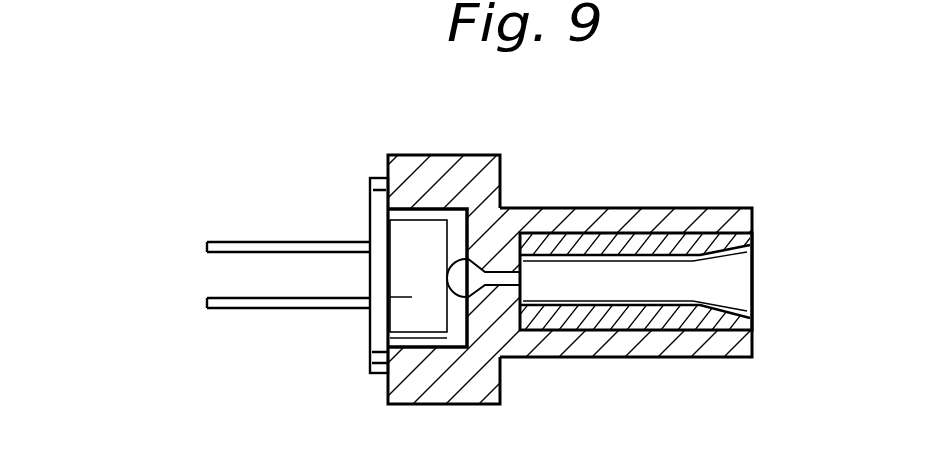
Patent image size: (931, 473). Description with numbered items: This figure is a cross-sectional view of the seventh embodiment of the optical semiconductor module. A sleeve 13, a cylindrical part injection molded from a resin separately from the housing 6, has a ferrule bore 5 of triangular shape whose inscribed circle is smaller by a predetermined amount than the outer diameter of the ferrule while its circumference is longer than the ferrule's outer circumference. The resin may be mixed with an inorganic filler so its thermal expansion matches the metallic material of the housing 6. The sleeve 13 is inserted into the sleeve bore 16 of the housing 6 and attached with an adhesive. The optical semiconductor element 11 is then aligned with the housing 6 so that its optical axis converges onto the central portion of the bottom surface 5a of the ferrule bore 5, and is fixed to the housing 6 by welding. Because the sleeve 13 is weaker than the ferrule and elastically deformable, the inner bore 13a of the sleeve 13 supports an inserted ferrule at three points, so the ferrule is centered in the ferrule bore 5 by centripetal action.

The ferrule bore 5 is at (697, 297).
The bottom surface of the ferrule bore 5a is at (530, 277).
The housing 6 is at (430, 388).
The optical semiconductor element 11 is at (398, 310).
The sleeve 13 is at (518, 323).
The inner bore of the sleeve 13a is at (632, 265).
The sleeve bore 16 is at (645, 323).